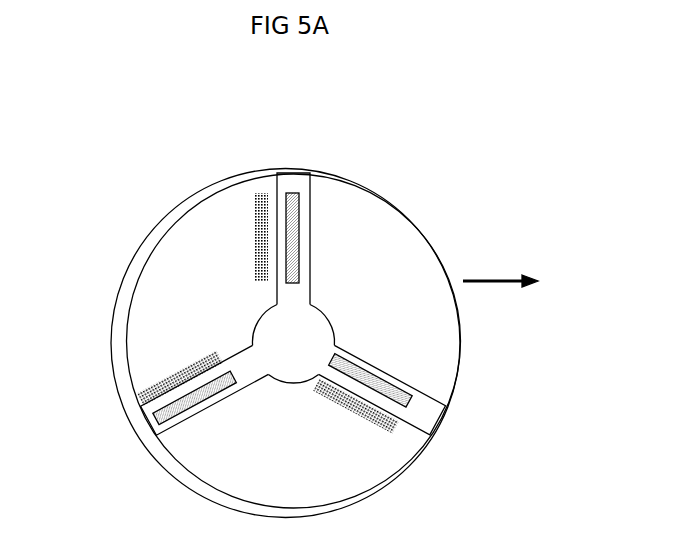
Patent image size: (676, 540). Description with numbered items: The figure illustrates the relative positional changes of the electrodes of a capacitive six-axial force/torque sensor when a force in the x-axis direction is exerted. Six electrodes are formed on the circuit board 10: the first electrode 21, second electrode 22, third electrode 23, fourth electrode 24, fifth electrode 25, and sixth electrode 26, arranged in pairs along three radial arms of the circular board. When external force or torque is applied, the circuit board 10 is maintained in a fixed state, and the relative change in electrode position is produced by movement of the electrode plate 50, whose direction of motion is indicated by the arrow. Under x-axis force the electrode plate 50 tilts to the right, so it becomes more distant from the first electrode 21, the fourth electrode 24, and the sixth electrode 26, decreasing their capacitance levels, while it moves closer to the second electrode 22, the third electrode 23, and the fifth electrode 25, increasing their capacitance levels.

The circuit board 10 is at (117, 320).
The electrode plate 50 is at (456, 320).
The first electrode 21 is at (292, 193).
The second electrode 22 is at (261, 193).
The third electrode 23 is at (140, 402).
The fourth electrode 24 is at (147, 436).
The fifth electrode 25 is at (402, 432).
The sixth electrode 26 is at (412, 404).